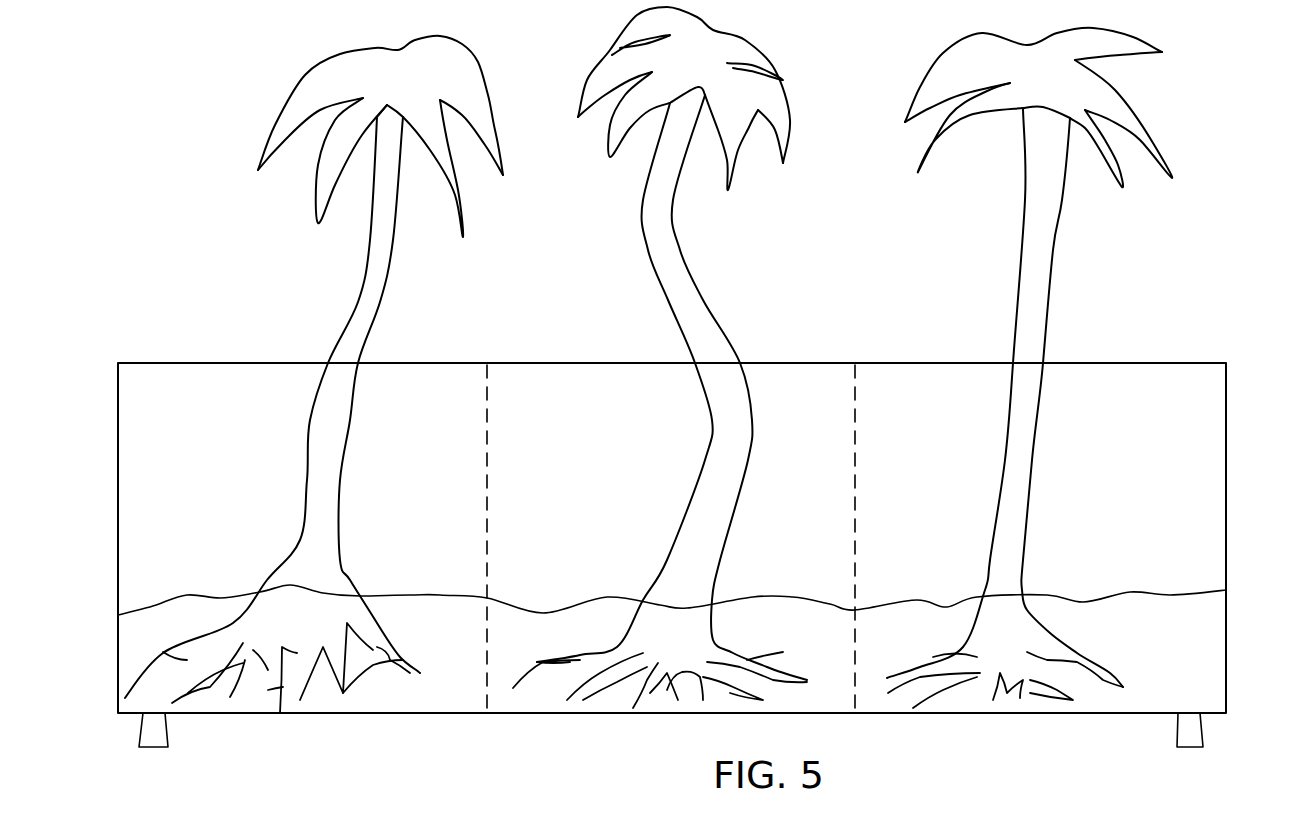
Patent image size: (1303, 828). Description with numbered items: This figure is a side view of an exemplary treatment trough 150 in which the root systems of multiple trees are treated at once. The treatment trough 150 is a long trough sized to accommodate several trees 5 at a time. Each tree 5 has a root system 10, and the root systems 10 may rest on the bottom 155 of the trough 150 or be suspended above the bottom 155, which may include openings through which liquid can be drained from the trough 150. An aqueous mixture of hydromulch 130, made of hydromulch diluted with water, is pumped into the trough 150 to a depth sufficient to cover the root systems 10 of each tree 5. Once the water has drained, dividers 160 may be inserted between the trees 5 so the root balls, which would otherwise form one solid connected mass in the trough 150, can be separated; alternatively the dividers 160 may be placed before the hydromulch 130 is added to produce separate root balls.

The tree 5 is at (365, 300).
The root system 10 is at (643, 664).
The aqueous mixture of hydromulch 130 is at (1170, 593).
The treatment trough 150 is at (1210, 652).
The bottom 155 is at (1080, 716).
The dividers 160 is at (489, 408).